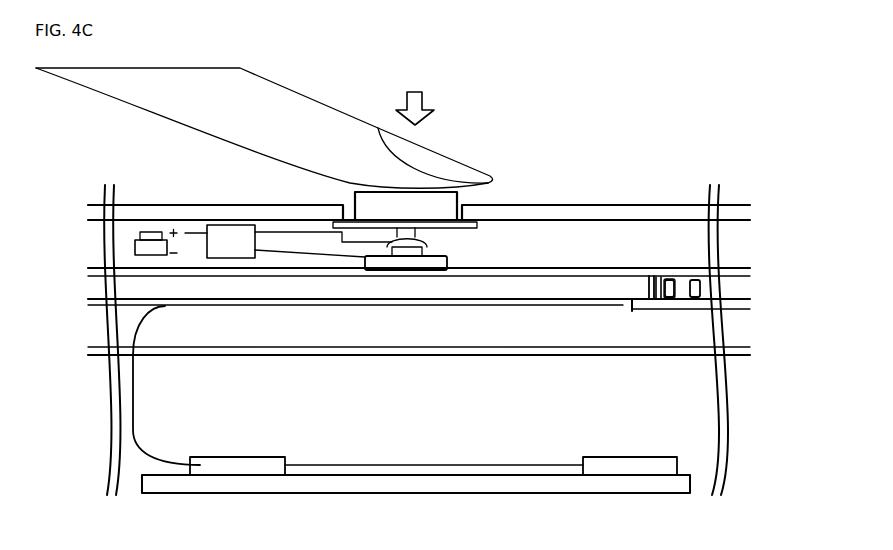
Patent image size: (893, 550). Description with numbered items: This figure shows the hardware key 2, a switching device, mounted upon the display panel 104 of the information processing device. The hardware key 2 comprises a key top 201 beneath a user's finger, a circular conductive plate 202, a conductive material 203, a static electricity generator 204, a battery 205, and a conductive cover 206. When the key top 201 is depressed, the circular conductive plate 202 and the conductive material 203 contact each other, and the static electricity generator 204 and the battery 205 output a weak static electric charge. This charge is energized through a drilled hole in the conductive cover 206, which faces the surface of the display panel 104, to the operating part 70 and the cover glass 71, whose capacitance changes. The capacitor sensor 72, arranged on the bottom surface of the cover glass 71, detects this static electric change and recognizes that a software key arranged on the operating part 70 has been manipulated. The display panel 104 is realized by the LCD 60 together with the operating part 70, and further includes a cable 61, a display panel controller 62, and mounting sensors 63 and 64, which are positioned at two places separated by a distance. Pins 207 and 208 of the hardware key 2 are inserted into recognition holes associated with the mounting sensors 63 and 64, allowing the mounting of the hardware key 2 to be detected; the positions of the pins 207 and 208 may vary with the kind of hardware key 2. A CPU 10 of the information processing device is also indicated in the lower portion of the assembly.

The hardware key 2 is at (687, 166).
The CPU 10 is at (650, 457).
The LCD 60 is at (740, 357).
The cable 61 is at (149, 452).
The display panel controller 62 is at (280, 457).
The mounting sensor 63 is at (736, 311).
The mounting sensor 64 is at (696, 311).
The operating part 70 is at (753, 286).
The cover glass 71 is at (745, 293).
The capacitor sensor 72 is at (624, 312).
The display panel 104 is at (732, 445).
The key top 201 is at (354, 190).
The circular conductive plate 202 is at (420, 238).
The conductive material 203 is at (447, 256).
The static electricity generator 204 is at (240, 225).
The battery 205 is at (152, 232).
The conductive cover 206 is at (539, 267).
The pin 207 is at (669, 282).
The pin 208 is at (669, 288).